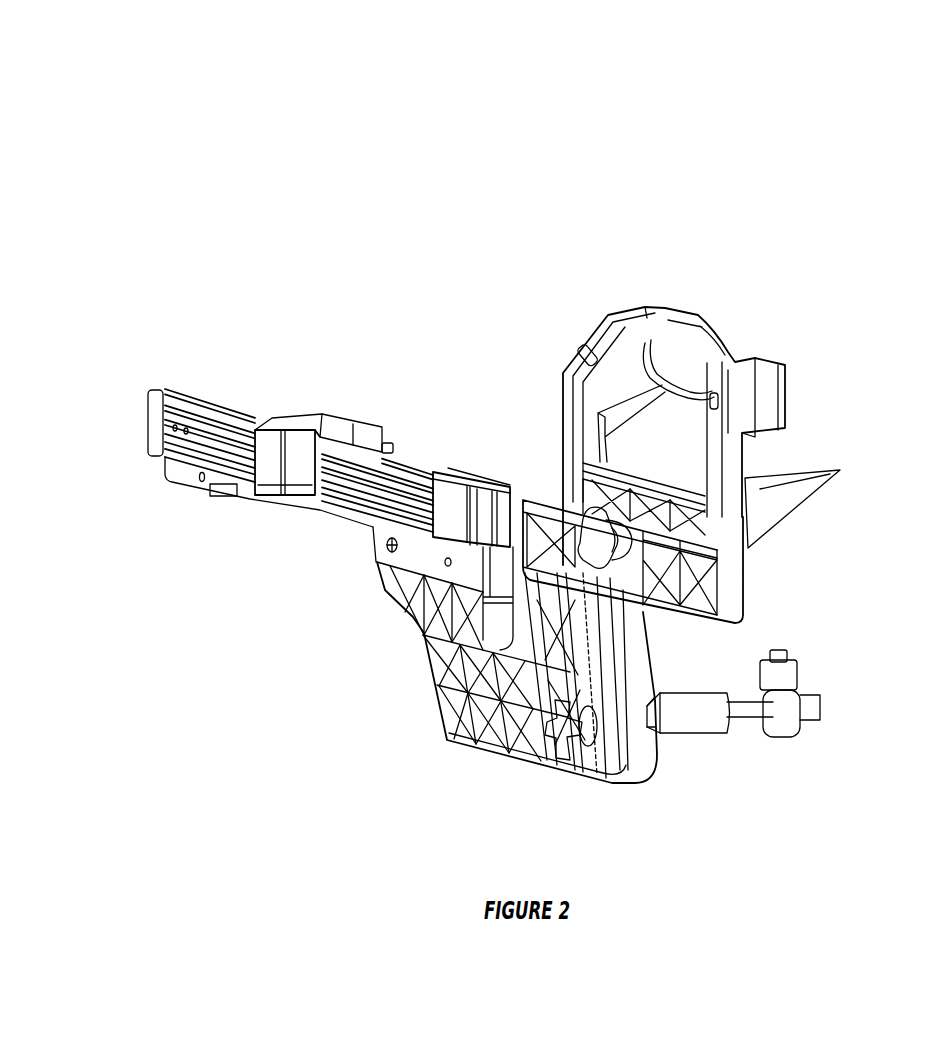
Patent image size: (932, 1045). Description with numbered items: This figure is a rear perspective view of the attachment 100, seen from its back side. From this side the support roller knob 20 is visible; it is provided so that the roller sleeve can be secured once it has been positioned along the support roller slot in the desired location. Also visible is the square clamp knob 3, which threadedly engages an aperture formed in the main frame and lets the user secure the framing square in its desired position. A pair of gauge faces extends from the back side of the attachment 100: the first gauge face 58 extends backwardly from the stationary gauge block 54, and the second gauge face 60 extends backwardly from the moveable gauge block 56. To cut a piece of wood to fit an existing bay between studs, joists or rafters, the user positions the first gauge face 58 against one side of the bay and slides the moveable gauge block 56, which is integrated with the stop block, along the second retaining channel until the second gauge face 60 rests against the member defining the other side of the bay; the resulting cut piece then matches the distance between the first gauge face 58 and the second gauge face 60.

The attachment 100 is at (913, 20).
The support roller knob 20 is at (563, 727).
The second gauge face 60 is at (247, 458).
The moveable gauge block 56 is at (323, 430).
The stationary gauge block 54 is at (463, 478).
The first gauge face 58 is at (455, 520).
The square clamp knob 3 is at (622, 522).